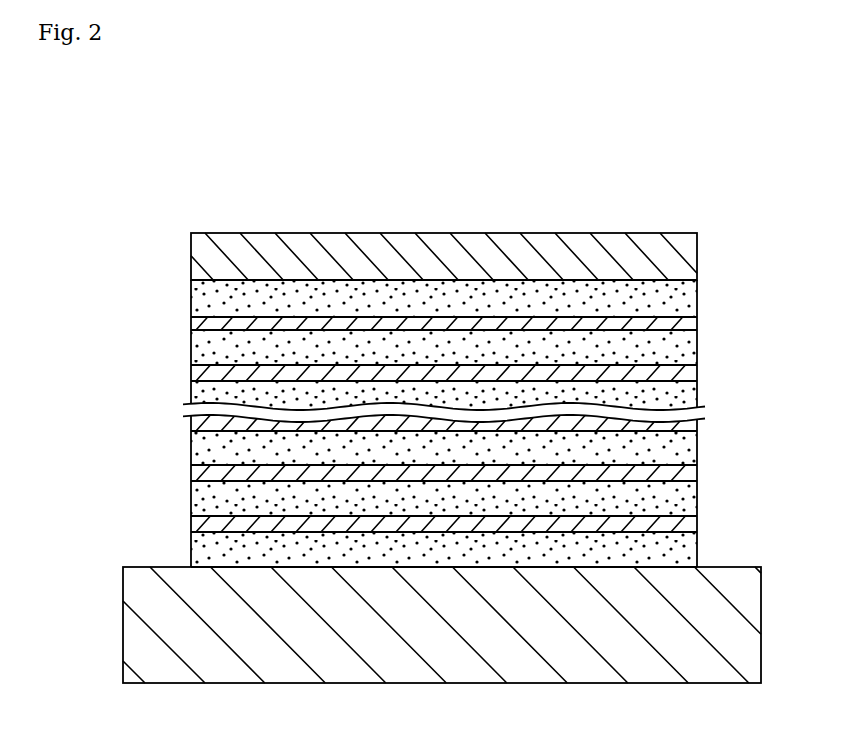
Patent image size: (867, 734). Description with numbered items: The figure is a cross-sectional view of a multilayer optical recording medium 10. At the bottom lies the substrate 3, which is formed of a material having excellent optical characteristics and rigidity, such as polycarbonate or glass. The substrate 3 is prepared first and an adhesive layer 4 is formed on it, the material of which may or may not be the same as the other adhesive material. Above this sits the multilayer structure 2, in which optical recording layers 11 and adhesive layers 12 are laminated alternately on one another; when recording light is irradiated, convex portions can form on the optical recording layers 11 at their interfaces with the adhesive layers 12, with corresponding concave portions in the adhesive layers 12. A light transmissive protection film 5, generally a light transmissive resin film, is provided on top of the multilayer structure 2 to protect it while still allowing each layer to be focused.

The multilayer optical recording medium 10 is at (431, 335).
The light transmissive protection film 5 is at (692, 258).
The multilayer structure 2 is at (428, 418).
The adhesive layer 12 is at (188, 298).
The optical recording layer 11 is at (188, 323).
The adhesive layer 4 is at (697, 553).
The substrate 3 is at (750, 650).